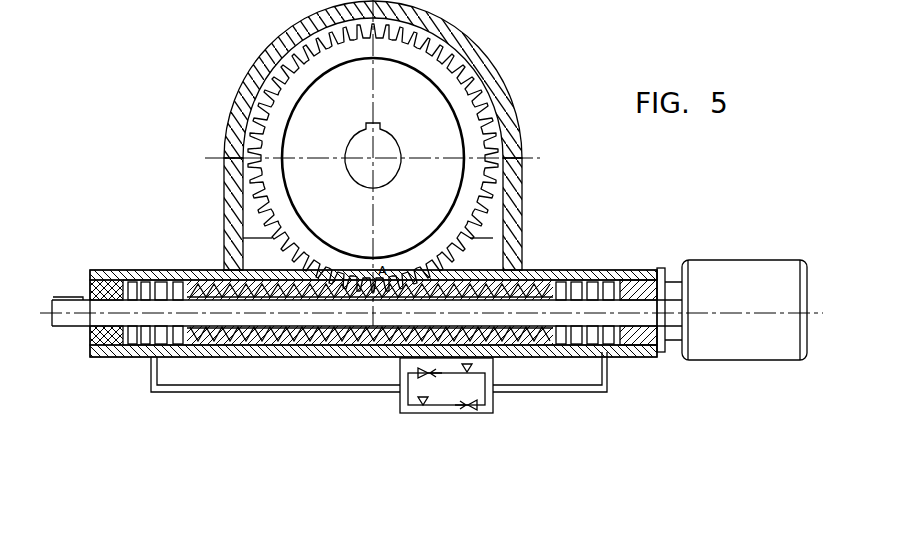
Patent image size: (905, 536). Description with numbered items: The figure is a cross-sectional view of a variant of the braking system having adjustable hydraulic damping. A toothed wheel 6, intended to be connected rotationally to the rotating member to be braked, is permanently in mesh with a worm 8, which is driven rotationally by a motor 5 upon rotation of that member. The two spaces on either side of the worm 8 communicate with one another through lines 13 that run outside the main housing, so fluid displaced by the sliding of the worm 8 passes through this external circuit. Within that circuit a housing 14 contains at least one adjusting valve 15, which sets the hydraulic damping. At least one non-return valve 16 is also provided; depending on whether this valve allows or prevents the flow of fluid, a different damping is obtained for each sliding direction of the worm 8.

The motor 5 is at (728, 258).
The toothed wheel 6 is at (252, 97).
The worm 8 is at (493, 277).
The lines 13 is at (210, 394).
The housing 14 is at (397, 418).
The adjusting valve 15 is at (422, 416).
The non-return valve 16 is at (467, 416).